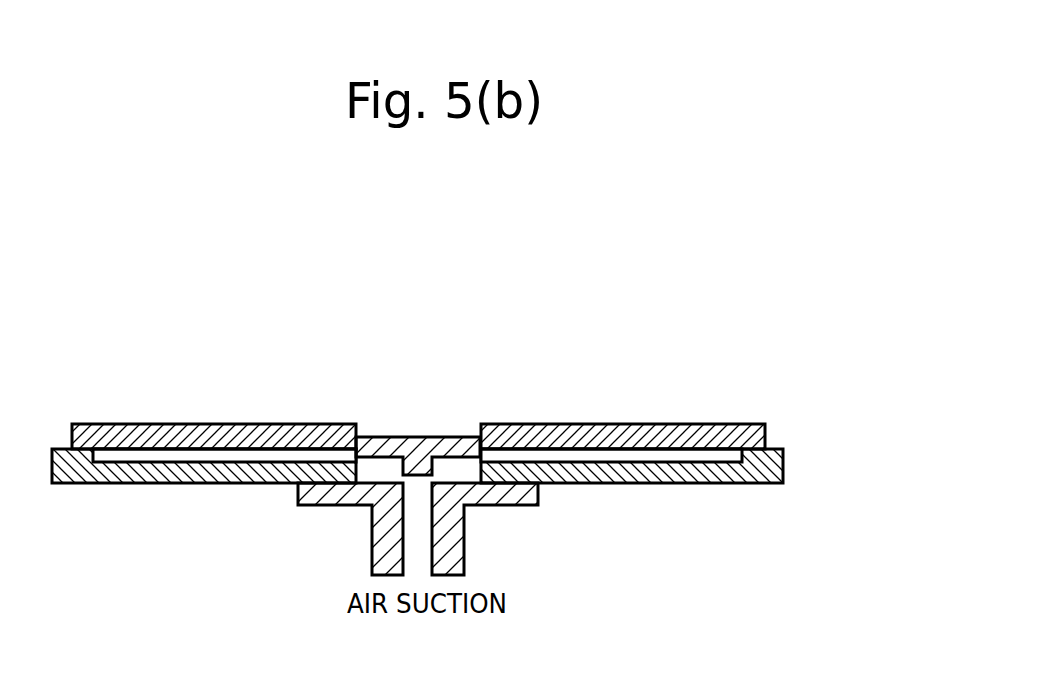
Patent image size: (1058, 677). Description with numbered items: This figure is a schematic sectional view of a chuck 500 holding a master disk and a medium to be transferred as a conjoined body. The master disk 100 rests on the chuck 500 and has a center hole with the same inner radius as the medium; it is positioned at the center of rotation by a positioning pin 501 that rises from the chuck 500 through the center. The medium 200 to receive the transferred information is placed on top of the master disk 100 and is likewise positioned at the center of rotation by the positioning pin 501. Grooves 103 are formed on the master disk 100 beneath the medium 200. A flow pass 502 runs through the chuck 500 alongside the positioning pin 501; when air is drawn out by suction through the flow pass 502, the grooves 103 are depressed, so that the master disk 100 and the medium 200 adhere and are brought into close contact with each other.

The master disk 100 is at (207, 485).
The grooves 103 is at (578, 457).
The medium to receive transferred information 200 is at (173, 436).
The chuck 500 is at (495, 495).
The positioning pin 501 is at (395, 447).
The flow pass 502 is at (457, 463).